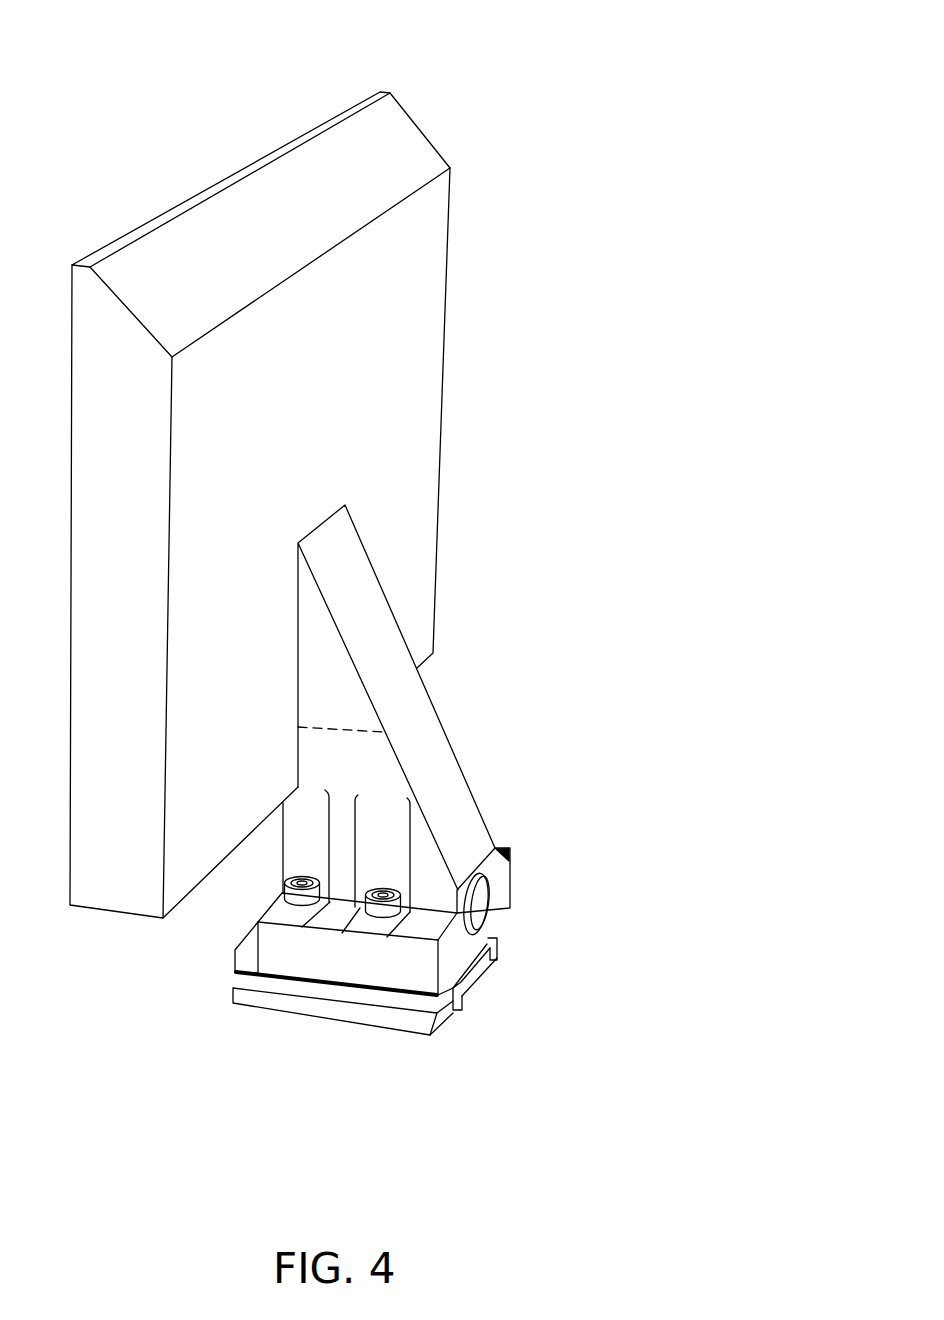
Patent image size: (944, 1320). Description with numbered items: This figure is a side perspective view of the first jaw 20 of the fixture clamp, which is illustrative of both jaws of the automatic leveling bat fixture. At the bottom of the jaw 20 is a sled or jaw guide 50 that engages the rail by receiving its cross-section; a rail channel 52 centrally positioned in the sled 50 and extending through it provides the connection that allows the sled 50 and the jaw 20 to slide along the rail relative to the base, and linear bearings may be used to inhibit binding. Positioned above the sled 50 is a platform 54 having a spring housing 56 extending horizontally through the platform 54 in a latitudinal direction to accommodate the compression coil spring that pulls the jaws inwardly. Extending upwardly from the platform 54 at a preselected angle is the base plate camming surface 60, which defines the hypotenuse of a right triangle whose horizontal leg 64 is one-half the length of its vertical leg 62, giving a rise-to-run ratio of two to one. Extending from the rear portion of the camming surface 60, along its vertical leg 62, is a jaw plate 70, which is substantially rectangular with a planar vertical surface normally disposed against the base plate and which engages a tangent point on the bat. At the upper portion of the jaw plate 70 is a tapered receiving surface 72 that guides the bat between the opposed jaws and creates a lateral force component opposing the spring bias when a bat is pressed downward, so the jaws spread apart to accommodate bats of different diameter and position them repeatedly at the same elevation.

The first jaw 20 is at (145, 173).
The sled or jaw guide 50 is at (330, 1010).
The rail channel 52 is at (482, 985).
The platform 54 is at (293, 950).
The spring housing 56 is at (478, 898).
The base plate camming surface 60 is at (440, 772).
The vertical leg 62 is at (298, 655).
The horizontal leg 64 is at (353, 728).
The jaw plate 70 is at (334, 371).
The tapered receiving surface 72 is at (403, 142).